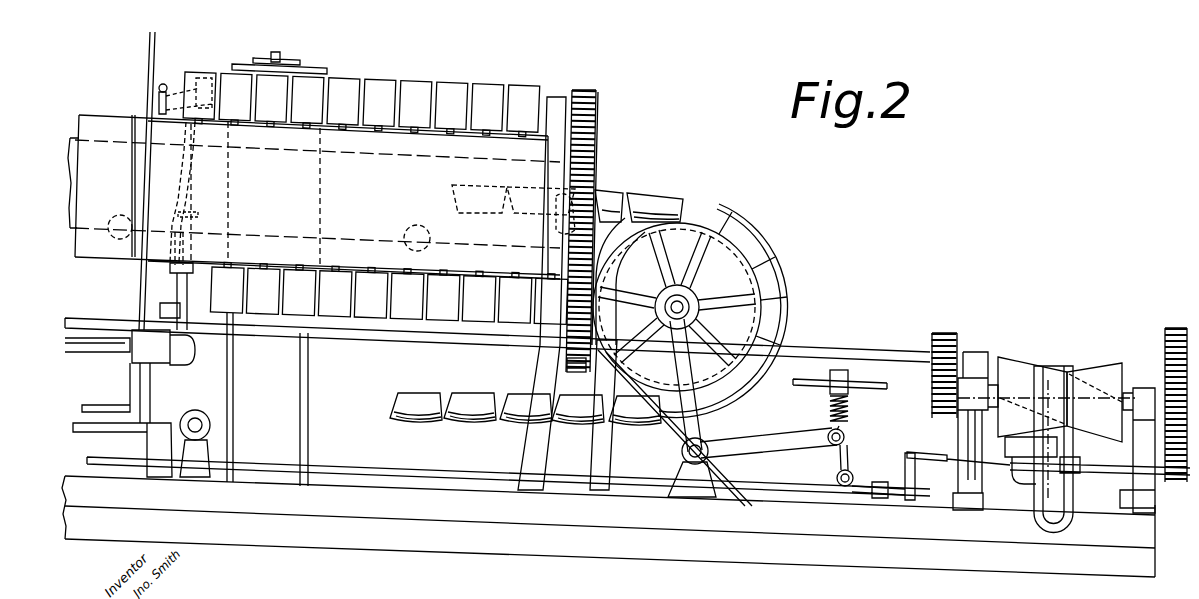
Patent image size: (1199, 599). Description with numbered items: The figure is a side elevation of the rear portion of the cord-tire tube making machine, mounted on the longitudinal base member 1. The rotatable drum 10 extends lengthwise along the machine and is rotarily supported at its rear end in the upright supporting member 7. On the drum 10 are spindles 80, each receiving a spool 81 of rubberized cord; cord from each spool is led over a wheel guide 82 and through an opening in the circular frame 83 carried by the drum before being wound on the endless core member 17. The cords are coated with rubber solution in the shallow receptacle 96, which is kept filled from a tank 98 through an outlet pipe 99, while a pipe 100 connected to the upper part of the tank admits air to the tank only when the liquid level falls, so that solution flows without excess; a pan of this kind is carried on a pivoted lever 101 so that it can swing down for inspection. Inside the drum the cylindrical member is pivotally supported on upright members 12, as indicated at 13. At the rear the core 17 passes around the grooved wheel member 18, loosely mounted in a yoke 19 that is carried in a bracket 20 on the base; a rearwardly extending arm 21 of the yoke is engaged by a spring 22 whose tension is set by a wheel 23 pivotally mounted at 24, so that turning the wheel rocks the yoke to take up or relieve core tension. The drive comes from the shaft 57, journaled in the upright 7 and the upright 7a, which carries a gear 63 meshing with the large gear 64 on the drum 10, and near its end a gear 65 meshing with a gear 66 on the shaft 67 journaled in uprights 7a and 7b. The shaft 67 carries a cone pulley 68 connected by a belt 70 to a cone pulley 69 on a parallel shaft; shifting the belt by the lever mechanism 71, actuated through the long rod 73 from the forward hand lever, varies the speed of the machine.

The base member 1 is at (608, 526).
The upright supporting member 7 is at (542, 293).
The upright 7a is at (960, 485).
The upright 7b is at (1141, 490).
The drum 10 is at (97, 120).
The upright members 12 is at (617, 354).
The pivotal support 13 is at (563, 207).
The core member 17 is at (672, 202).
The wheel member 18 is at (767, 300).
The yoke 19 is at (708, 423).
The bracket 20 is at (683, 452).
The rearwardly extending arm 21 is at (772, 440).
The spring 22 is at (845, 437).
The wheel 23 is at (852, 393).
The pivotal mounting 24 is at (851, 474).
The shaft 57 is at (364, 348).
The gear 63 is at (581, 376).
The large gear 64 is at (595, 142).
The gear 65 is at (952, 335).
The gear 66 is at (932, 405).
The shaft 67 is at (998, 382).
The cone pulley 68 is at (1026, 371).
The cone pulley 69 is at (1108, 369).
The belt 70 is at (1063, 371).
The lever mechanism 71 is at (924, 456).
The long rod 73 is at (386, 468).
The spindles 80 is at (408, 131).
The spool 81 is at (452, 86).
The wheel guide 82 is at (172, 84).
The circular frame 83 is at (147, 57).
The receptacle 96 is at (100, 356).
The tank 98 is at (231, 184).
The outlet pipe 99 is at (197, 355).
The pipe 100 is at (181, 190).
The lever 101 is at (128, 405).